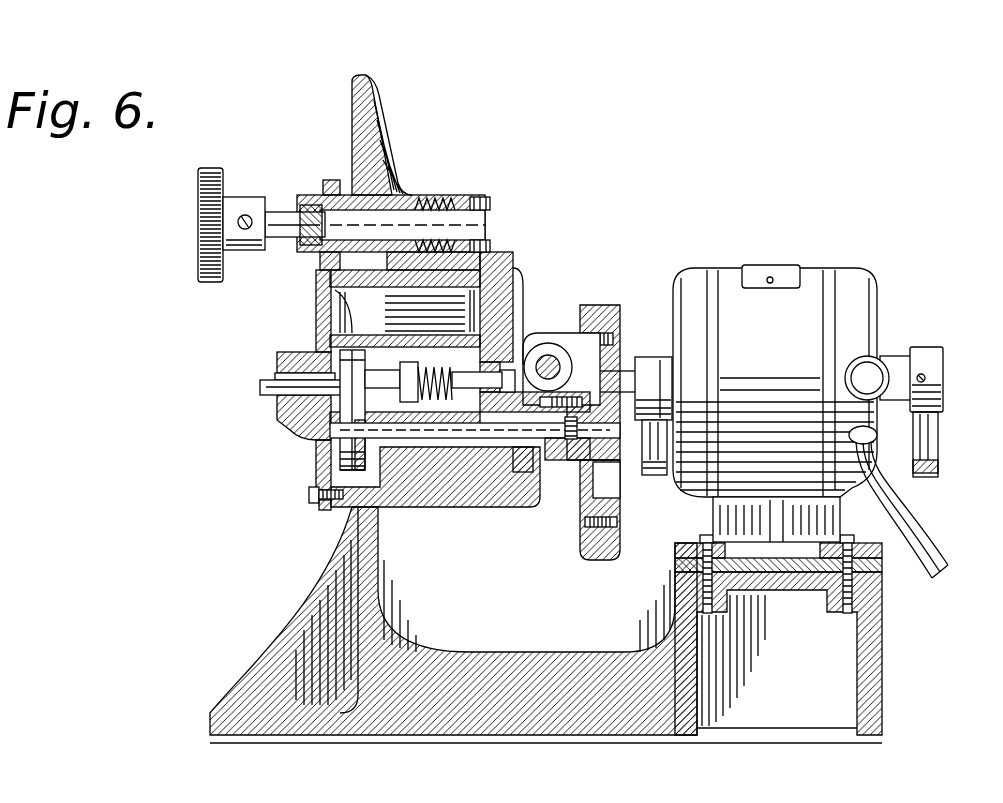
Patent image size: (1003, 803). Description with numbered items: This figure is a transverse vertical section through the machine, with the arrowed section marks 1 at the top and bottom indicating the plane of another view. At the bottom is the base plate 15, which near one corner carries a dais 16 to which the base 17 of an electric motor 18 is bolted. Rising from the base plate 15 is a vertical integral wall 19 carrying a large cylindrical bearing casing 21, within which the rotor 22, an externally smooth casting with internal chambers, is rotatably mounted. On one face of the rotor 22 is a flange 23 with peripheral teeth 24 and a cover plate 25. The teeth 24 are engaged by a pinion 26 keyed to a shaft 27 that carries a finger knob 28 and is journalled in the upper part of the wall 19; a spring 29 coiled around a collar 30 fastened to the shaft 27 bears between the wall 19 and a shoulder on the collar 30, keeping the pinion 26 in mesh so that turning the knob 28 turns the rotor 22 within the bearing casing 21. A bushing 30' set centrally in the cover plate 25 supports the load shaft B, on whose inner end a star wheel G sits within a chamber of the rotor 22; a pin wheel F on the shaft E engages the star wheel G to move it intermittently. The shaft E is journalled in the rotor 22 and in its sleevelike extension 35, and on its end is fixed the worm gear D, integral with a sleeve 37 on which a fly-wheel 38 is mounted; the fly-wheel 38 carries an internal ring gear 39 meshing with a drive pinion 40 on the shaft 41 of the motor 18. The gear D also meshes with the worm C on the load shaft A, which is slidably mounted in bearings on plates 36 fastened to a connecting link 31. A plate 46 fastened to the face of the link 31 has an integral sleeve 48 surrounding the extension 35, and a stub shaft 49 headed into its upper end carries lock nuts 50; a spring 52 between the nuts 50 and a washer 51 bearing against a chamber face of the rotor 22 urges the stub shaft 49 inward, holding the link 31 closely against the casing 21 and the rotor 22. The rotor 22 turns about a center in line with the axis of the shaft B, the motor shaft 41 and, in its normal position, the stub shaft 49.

The section line 1 is at (557, 50).
The base plate 15 is at (555, 713).
The dais 16 is at (882, 590).
The base of electric motor 17 is at (776, 519).
The electric motor 18 is at (812, 272).
The vertical integral wall 19 is at (372, 148).
The bearing casing 21 is at (349, 311).
The rotor 22 is at (446, 507).
The flange 23 is at (315, 282).
The peripheral teeth 24 is at (335, 505).
The cover plate 25 is at (318, 318).
The pinion 26 is at (322, 254).
The shaft 27 is at (298, 215).
The finger knob 28 is at (198, 226).
The spring 29 is at (430, 196).
The collar 30 is at (423, 216).
The bushing 30' is at (250, 361).
The connecting link 31 is at (500, 270).
The sleevelike extension 35 is at (528, 500).
The plates 36 is at (540, 295).
The sleeve 37 is at (620, 470).
The fly-wheel 38 is at (600, 560).
The internal ring gear 39 is at (620, 524).
The drive pinion 40 is at (620, 360).
The shaft of electric motor 41 is at (640, 380).
The plate 46 is at (461, 311).
The integral sleeve 48 is at (492, 507).
The stub shaft 49 is at (425, 313).
The lock nuts 50 is at (391, 374).
The washer 51 is at (460, 372).
The spring 52 is at (475, 432).
The load shaft A is at (550, 350).
The second load shaft B is at (262, 396).
The worm C is at (590, 332).
The worm gear D is at (540, 472).
The shaft E is at (396, 505).
The pin wheel F is at (330, 440).
The star wheel G is at (361, 410).